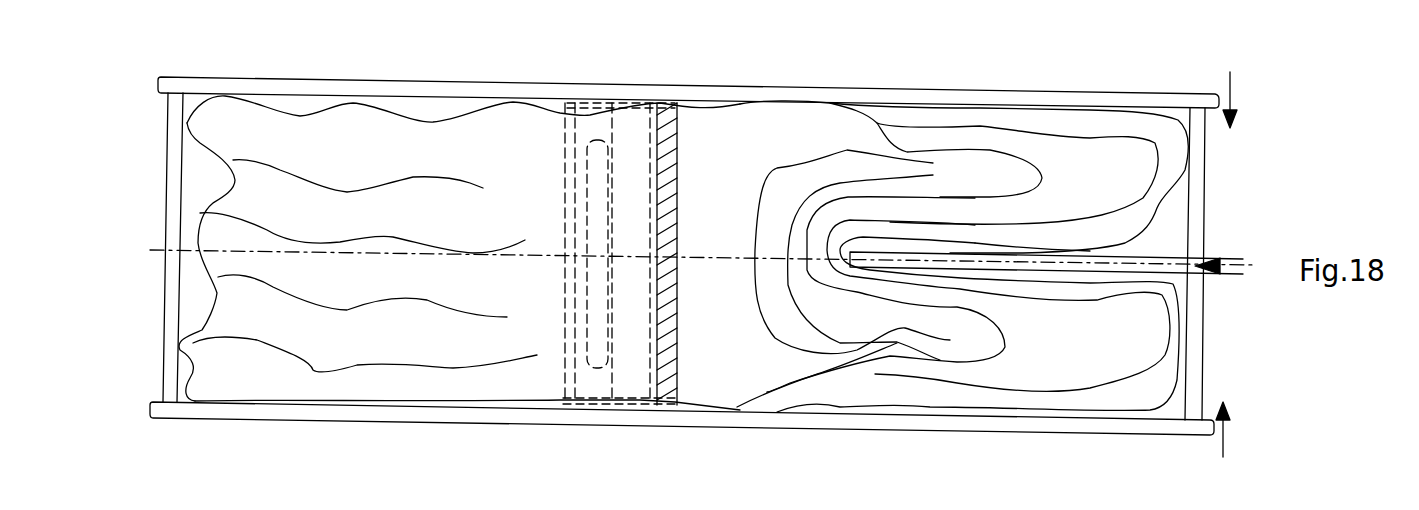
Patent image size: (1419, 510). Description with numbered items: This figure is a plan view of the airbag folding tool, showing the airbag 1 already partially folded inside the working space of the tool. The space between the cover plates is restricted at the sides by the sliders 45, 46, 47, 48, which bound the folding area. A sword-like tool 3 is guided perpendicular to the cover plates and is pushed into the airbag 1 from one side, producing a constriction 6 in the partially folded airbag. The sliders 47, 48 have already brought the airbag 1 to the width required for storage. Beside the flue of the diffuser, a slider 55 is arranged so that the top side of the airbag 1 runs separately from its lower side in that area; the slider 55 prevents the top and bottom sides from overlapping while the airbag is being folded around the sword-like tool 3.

The airbag 1 is at (312, 138).
The sword-like tool 3 is at (1197, 257).
The constriction 6 is at (832, 247).
The slider 45 is at (177, 108).
The slider 46 is at (1198, 182).
The slider 47 is at (958, 93).
The slider 48 is at (1157, 425).
The slider 55 is at (673, 115).